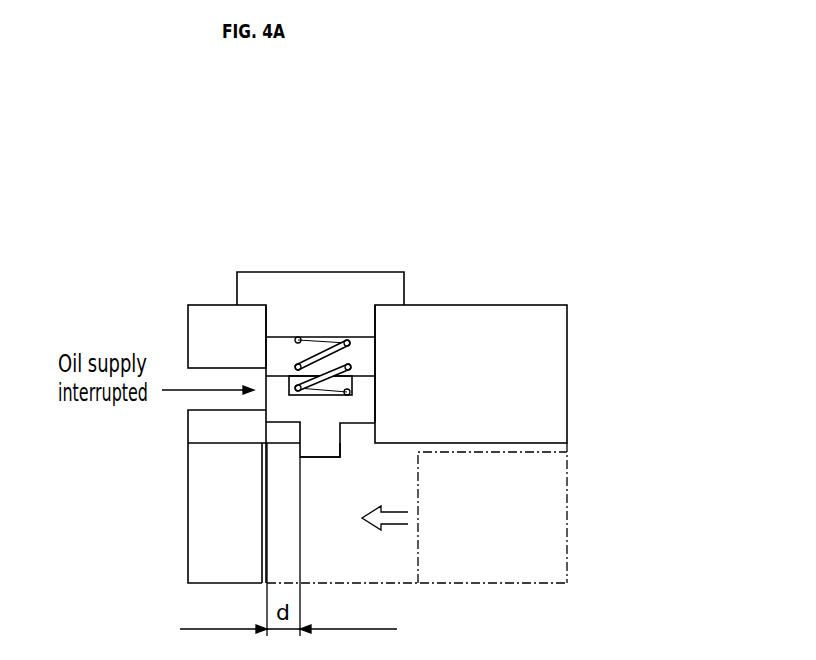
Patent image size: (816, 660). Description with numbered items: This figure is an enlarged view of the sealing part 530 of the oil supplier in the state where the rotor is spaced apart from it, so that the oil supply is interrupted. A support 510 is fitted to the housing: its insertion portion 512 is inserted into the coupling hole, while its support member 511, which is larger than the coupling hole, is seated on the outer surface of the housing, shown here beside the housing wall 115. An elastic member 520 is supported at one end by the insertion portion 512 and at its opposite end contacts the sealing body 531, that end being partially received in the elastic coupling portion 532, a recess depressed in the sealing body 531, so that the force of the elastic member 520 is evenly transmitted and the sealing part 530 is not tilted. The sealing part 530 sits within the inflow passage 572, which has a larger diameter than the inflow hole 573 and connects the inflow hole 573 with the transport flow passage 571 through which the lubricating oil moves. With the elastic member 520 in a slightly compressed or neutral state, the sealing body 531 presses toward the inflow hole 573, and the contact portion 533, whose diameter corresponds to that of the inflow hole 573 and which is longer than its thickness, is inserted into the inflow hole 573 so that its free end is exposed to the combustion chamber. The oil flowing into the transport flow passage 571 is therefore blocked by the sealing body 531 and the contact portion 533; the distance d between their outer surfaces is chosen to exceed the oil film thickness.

The cylinder block 115 is at (265, 350).
The support 510 is at (248, 185).
The support member 511 is at (321, 283).
The insertion portion 512 is at (266, 322).
The elastic member 520 is at (345, 337).
The sealing part 530 is at (493, 397).
The sealing body 531 is at (375, 400).
The elastic coupling portion 532 is at (352, 387).
The contact portion 533 is at (330, 432).
The transport flow passage 571 is at (203, 400).
The inflow passage 572 is at (270, 417).
The inflow hole 573 is at (298, 432).